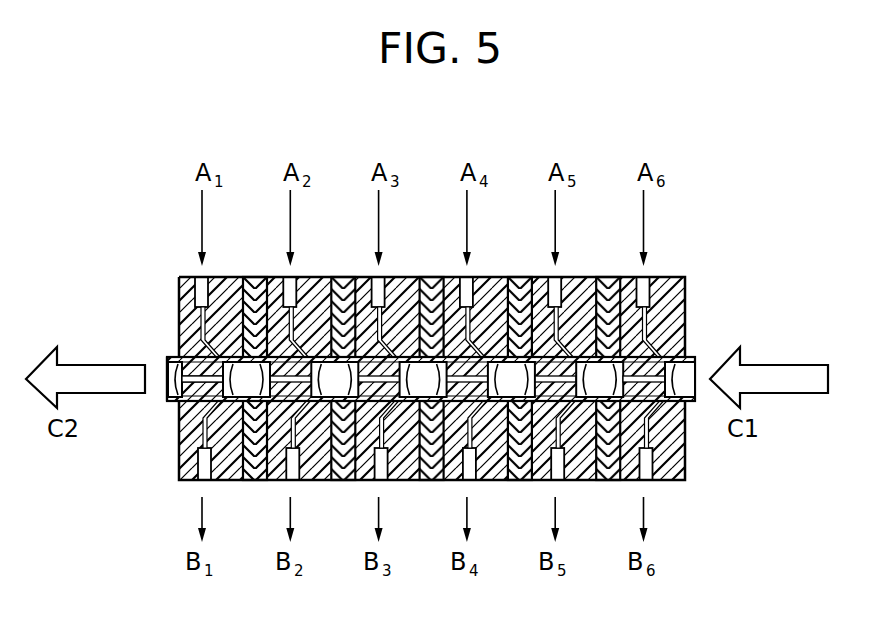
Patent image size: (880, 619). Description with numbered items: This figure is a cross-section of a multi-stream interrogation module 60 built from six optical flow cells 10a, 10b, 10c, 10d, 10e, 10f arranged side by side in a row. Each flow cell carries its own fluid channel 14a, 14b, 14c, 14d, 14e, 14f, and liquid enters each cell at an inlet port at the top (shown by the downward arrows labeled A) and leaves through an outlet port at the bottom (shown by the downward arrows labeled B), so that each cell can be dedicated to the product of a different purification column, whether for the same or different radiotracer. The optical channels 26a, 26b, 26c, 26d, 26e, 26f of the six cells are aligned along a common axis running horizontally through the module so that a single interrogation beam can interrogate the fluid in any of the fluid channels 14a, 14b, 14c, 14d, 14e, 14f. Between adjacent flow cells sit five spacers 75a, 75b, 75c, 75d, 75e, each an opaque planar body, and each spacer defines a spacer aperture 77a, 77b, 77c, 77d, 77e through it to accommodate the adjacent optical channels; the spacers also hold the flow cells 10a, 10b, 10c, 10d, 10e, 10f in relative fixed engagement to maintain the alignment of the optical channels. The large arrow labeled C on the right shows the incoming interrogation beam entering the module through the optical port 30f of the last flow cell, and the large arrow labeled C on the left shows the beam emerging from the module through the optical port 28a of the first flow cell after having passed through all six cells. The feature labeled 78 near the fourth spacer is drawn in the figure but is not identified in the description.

The multi-stream interrogation module 60 is at (531, 156).
The flow cell 10a is at (180, 470).
The flow cell 10b is at (262, 481).
The flow cell 10c is at (318, 481).
The flow cell 10d is at (405, 481).
The flow cell 10e is at (520, 481).
The flow cell 10f is at (595, 481).
The spacer 75a is at (260, 277).
The spacer 75b is at (347, 277).
The spacer 75c is at (440, 277).
The spacer 75d is at (528, 277).
The spacer 75e is at (614, 277).
The partition wall 78 is at (505, 277).
The optical channel 26a is at (226, 277).
The optical channel 26b is at (313, 277).
The optical channel 26c is at (401, 277).
The optical channel 26d is at (489, 277).
The optical channel 26e is at (575, 277).
The optical channel 26f is at (665, 277).
The spacer aperture 77a is at (180, 452).
The spacer aperture 77b is at (307, 481).
The spacer aperture 77c is at (396, 481).
The spacer aperture 77d is at (485, 481).
The spacer aperture 77e is at (575, 481).
The fluid channel 14a is at (185, 392).
The fluid channel 14b is at (273, 481).
The fluid channel 14c is at (340, 481).
The fluid channel 14d is at (430, 481).
The fluid channel 14e is at (535, 481).
The fluid channel 14f is at (620, 481).
The optical port 28a is at (167, 356).
The optical port 30f is at (701, 364).